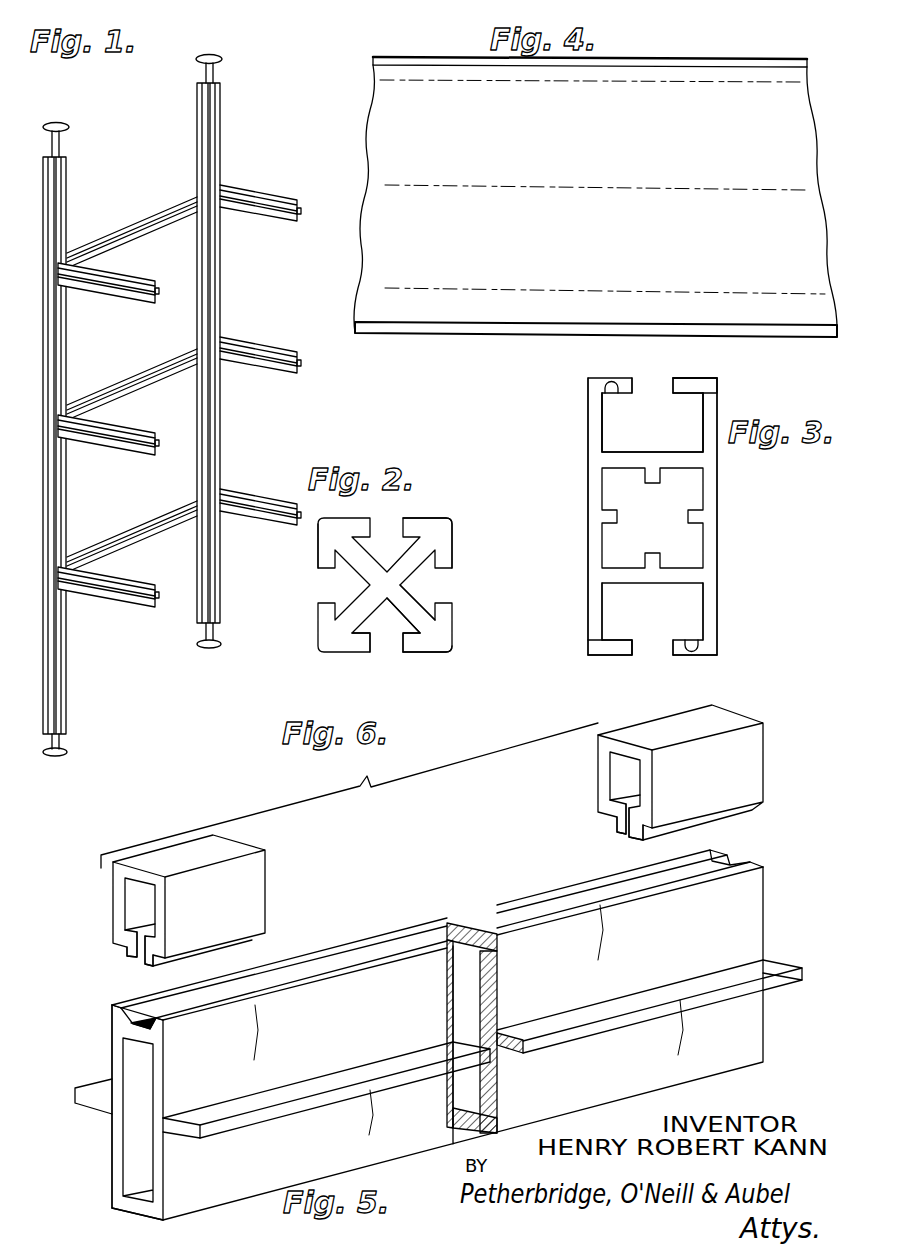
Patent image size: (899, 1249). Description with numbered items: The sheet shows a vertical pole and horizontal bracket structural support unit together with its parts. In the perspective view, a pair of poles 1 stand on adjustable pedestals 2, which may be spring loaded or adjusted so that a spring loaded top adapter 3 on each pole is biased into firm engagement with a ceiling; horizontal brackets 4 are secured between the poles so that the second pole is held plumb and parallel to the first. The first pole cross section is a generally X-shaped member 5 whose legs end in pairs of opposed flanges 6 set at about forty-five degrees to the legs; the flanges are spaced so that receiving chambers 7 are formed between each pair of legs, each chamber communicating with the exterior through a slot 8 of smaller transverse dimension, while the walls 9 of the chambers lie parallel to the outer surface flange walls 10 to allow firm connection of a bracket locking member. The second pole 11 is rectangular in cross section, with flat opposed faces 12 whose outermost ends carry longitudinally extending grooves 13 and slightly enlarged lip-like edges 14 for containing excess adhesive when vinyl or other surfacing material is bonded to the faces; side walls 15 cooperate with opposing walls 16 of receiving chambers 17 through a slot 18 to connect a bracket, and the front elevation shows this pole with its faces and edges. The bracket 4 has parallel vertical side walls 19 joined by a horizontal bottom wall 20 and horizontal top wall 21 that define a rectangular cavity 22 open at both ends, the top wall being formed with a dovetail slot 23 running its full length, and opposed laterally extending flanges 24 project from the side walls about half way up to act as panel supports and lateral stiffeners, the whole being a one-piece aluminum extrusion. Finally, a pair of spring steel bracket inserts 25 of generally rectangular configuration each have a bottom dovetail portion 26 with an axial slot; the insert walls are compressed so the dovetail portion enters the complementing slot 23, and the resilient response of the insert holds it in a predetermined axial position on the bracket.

In FIG. 1, the pole 1 is at (224, 126).
In FIG. 2, the pole 1 is at (464, 524).
In FIG. 1, the adjustable pedestal 2 is at (66, 748).
In FIG. 1, the spring loaded top adapter 3 is at (222, 60).
In FIG. 1, the horizontal bracket 4 is at (160, 213).
In FIG. 5, the horizontal bracket 4 is at (780, 895).
In FIG. 2, the X-shaped member 5 is at (418, 607).
In FIG. 2, the opposed flanges 6 is at (448, 562).
In FIG. 2, the receiving chamber 7 is at (377, 622).
In FIG. 2, the slot 8 is at (330, 582).
In FIG. 2, the chamber wall 9 is at (406, 632).
In FIG. 2, the outer surface flange wall 10 is at (433, 652).
In FIG. 3, the pole 11 is at (742, 504).
In FIG. 4, the pole 11 is at (578, 153).
In FIG. 3, the opposed faces 12 is at (588, 462).
In FIG. 4, the opposed faces 12 is at (802, 116).
In FIG. 3, the longitudinally extending groove 13 is at (722, 383).
In FIG. 3, the lip-like edge 14 is at (719, 652).
In FIG. 4, the lip-like edge 14 is at (760, 58).
In FIG. 3, the side wall 15 is at (693, 377).
In FIG. 3, the opposing wall 16 is at (612, 398).
In FIG. 3, the receiving chamber 17 is at (665, 441).
In FIG. 3, the slot 18 is at (637, 383).
In FIG. 5, the vertical side wall 19 is at (114, 1135).
In FIG. 5, the horizontal bottom wall 20 is at (132, 1208).
In FIG. 5, the horizontal top wall 21 is at (128, 1030).
In FIG. 5, the rectangular cavity 22 is at (142, 1160).
In FIG. 5, the dovetail slot 23 is at (120, 1010).
In FIG. 5, the laterally extending flange 24 is at (75, 1088).
In FIG. 6, the bracket insert 25 is at (265, 868).
In FIG. 6, the dovetail portion 26 is at (130, 957).